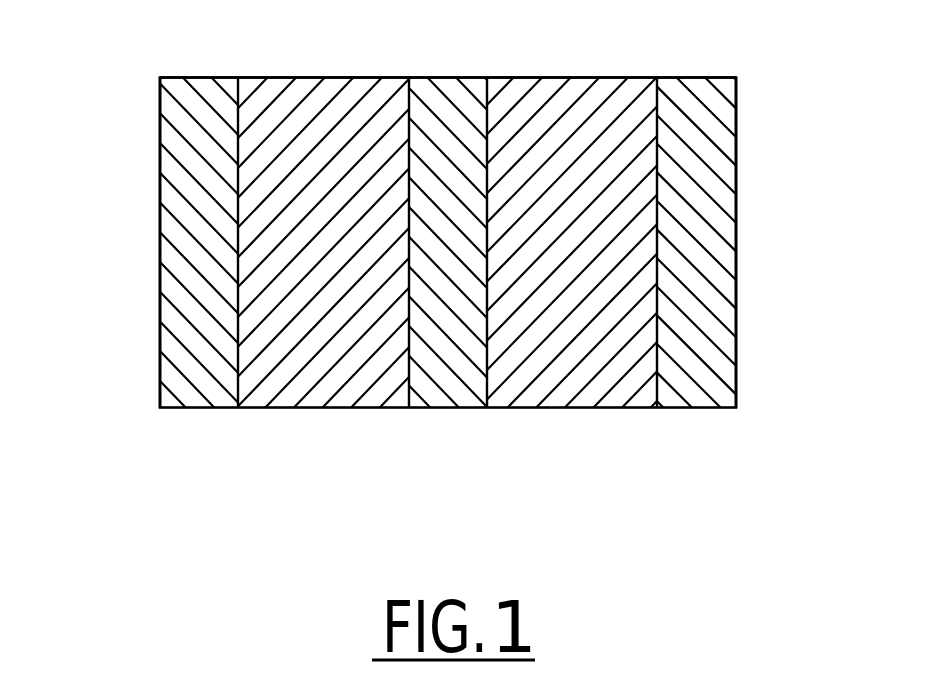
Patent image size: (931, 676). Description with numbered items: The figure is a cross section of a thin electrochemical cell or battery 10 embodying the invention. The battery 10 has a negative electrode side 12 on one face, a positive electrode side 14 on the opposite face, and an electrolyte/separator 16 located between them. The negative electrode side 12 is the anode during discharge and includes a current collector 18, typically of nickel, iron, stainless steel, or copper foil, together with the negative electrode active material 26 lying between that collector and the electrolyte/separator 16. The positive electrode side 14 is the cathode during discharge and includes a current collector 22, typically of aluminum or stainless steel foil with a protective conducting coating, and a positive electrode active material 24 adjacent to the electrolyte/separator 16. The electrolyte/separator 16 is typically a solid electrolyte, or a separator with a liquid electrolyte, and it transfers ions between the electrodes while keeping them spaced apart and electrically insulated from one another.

The electrochemical cell or battery 10 is at (452, 410).
The negative electrode side 12 is at (160, 233).
The positive electrode side 14 is at (736, 233).
The electrolyte/separator 16 is at (452, 77).
The current collector 18 is at (209, 388).
The current collector 22 is at (682, 390).
The positive electrode active material 24 is at (520, 388).
The first core layer 26 is at (377, 388).